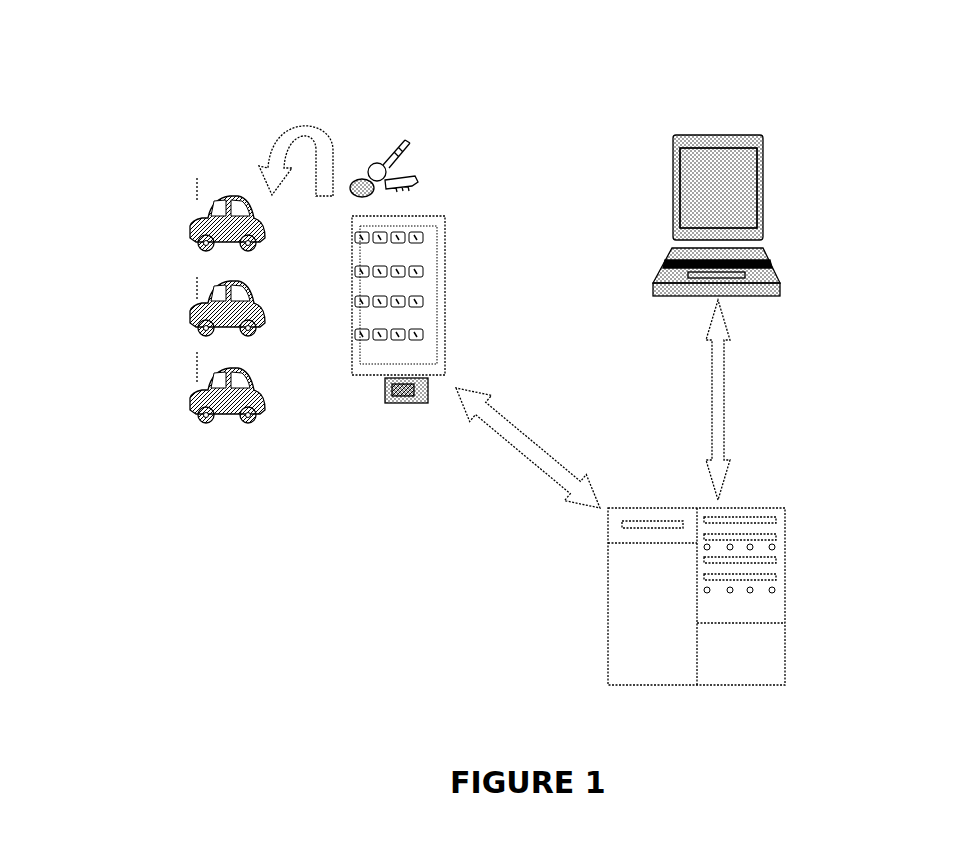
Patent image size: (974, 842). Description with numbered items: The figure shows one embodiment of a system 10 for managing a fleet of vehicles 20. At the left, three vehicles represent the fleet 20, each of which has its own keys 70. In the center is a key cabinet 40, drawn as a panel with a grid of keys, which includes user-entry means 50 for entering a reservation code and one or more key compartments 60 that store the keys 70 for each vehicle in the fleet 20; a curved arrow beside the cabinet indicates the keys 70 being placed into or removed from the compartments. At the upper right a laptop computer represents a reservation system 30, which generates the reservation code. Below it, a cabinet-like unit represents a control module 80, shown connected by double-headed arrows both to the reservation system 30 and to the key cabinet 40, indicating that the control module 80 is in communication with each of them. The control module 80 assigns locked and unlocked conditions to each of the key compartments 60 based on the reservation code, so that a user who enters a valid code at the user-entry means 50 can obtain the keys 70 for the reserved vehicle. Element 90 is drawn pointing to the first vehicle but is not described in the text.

The system 10 is at (215, 640).
The fleet of vehicles 20 is at (185, 412).
The reservation system 30 is at (777, 205).
The key cabinet 40 is at (414, 342).
The user-entry means 50 is at (392, 410).
The key compartments 60 is at (385, 355).
The keys 70 is at (370, 143).
The control module 80 is at (797, 622).
The vehicle transceiver 90 is at (197, 208).